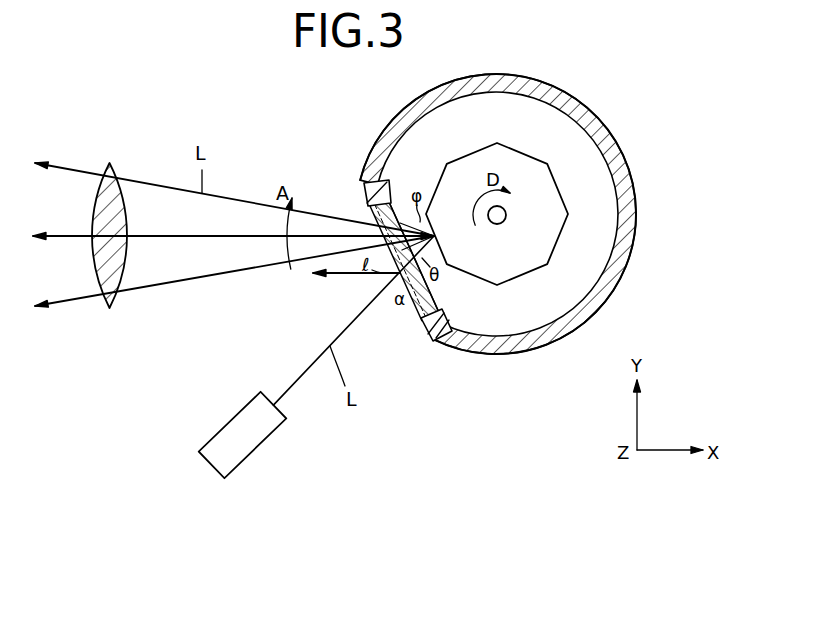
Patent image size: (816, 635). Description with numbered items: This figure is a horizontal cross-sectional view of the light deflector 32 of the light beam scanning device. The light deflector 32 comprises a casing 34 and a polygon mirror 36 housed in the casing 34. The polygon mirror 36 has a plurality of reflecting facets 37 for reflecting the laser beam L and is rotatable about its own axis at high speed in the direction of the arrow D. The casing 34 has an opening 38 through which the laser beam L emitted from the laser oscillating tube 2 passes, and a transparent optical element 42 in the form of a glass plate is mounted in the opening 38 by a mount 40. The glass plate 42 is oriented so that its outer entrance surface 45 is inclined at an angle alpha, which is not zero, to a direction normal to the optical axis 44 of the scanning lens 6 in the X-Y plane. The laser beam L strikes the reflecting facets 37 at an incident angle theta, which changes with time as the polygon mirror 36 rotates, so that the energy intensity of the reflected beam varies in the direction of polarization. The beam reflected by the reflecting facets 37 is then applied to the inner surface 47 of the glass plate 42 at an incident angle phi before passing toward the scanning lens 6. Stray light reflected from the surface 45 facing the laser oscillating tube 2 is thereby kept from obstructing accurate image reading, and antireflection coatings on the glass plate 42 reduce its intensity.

The laser oscillating tube 2 is at (240, 450).
The scanning lens 6 is at (110, 170).
The light deflector 32 is at (594, 108).
The casing 34 is at (627, 204).
The polygon mirror 36 is at (547, 232).
The reflecting facets 37 is at (443, 253).
The opening 38 is at (433, 298).
The mount 40 is at (432, 342).
The transparent optical element 42 is at (422, 316).
The optical axis 44 is at (173, 235).
The outer entrance surface 45 is at (418, 307).
The inner surface 47 is at (392, 212).